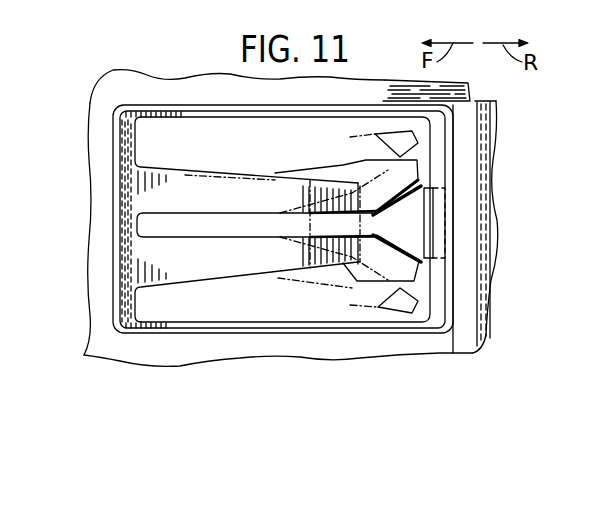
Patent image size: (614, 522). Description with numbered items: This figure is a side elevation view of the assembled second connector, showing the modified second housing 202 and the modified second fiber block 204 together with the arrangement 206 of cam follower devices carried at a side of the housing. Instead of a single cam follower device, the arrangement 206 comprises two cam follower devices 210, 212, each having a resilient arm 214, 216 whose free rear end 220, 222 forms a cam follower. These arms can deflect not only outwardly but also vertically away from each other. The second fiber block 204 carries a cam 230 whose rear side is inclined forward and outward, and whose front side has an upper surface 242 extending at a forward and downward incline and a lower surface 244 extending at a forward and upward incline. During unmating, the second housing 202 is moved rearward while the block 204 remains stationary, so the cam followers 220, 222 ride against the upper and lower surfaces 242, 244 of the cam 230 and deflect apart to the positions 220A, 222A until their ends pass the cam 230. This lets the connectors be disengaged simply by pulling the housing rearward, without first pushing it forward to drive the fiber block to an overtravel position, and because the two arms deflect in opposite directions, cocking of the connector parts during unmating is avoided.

The second housing 202 is at (478, 88).
The second fiber block 204 is at (503, 120).
The arrangement 206 is at (227, 140).
The cam follower device 210 is at (217, 166).
The cam follower device 212 is at (221, 283).
The resilient arm 214 is at (276, 173).
The resilient arm 216 is at (265, 302).
The free rear end 220 is at (371, 160).
The deflected position 220A is at (392, 130).
The free rear end 222 is at (390, 238).
The deflected position 222A is at (383, 306).
The cam 230 is at (455, 222).
The upper surface 242 is at (382, 212).
The lower surface 244 is at (382, 236).